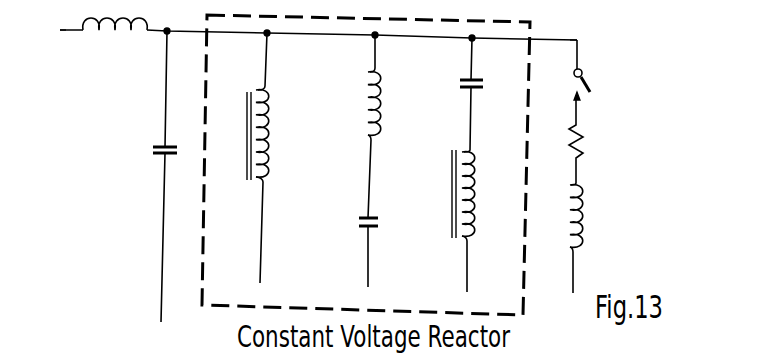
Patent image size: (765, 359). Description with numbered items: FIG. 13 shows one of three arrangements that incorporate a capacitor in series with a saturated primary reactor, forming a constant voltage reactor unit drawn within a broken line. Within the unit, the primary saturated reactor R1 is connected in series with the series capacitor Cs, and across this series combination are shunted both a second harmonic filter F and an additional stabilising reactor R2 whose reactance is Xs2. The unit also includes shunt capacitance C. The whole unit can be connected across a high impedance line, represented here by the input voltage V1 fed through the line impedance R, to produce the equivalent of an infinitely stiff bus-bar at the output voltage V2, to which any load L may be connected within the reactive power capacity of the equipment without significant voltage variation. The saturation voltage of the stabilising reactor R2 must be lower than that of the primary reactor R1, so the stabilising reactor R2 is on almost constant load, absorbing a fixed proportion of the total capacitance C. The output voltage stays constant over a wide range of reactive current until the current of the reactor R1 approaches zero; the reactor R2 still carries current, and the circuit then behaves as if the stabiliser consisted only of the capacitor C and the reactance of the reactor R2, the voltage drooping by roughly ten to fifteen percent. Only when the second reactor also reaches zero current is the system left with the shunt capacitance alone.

The input voltage V1 is at (60, 44).
The output voltage V2 is at (590, 49).
The input inductor (series reactance) R is at (115, 40).
The capacitance C is at (157, 176).
The stabilising reactor R2 is at (290, 158).
The second harmonic filter F is at (376, 161).
The series capacitor Cs is at (483, 94).
The primary reactor R1 is at (478, 221).
The load (switch, resistor and inductor) L is at (587, 166).